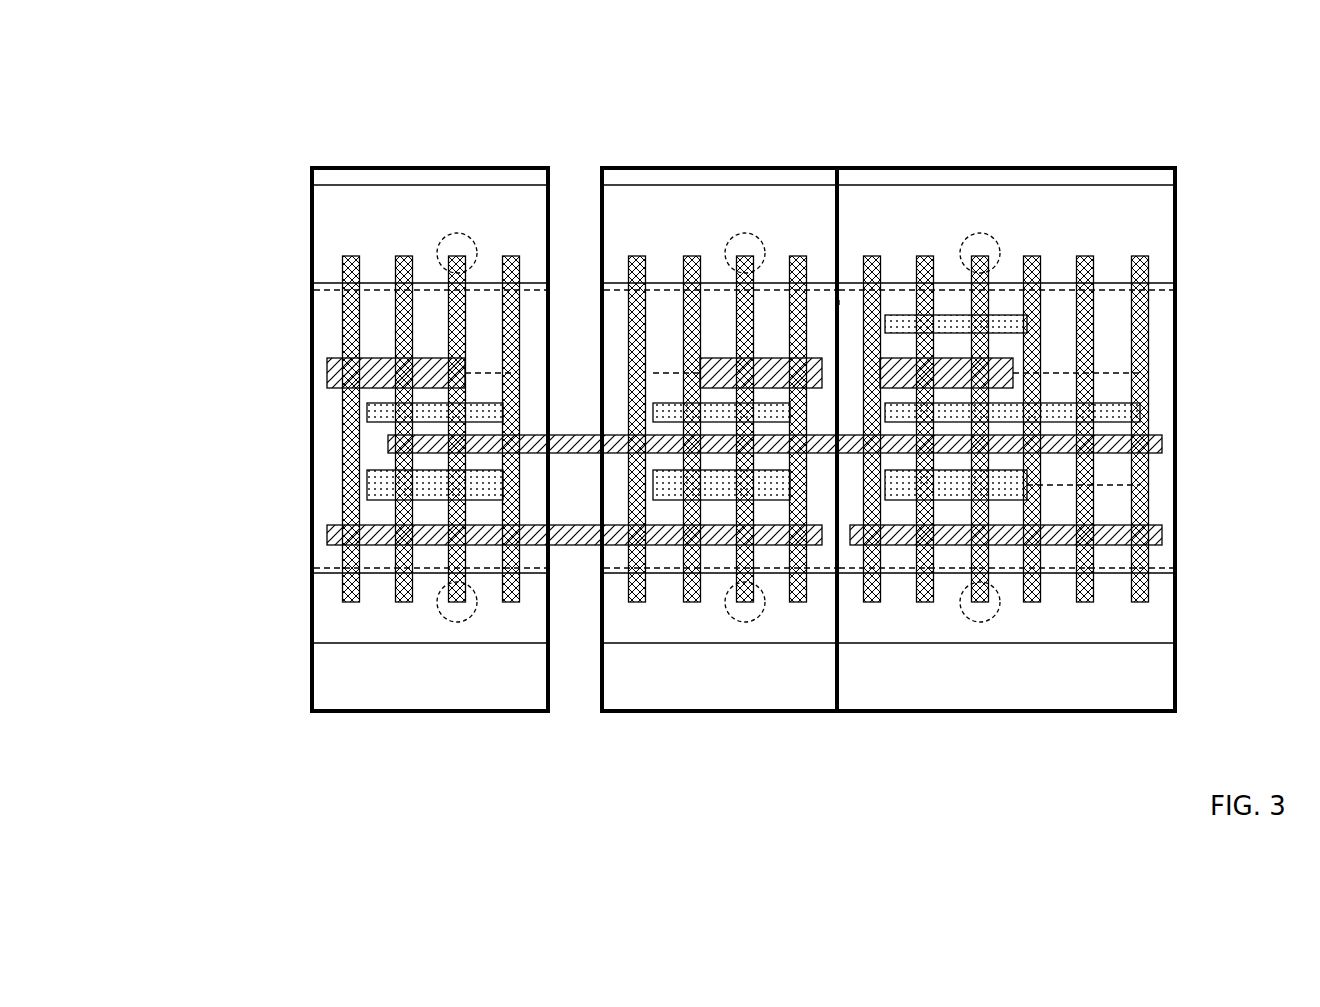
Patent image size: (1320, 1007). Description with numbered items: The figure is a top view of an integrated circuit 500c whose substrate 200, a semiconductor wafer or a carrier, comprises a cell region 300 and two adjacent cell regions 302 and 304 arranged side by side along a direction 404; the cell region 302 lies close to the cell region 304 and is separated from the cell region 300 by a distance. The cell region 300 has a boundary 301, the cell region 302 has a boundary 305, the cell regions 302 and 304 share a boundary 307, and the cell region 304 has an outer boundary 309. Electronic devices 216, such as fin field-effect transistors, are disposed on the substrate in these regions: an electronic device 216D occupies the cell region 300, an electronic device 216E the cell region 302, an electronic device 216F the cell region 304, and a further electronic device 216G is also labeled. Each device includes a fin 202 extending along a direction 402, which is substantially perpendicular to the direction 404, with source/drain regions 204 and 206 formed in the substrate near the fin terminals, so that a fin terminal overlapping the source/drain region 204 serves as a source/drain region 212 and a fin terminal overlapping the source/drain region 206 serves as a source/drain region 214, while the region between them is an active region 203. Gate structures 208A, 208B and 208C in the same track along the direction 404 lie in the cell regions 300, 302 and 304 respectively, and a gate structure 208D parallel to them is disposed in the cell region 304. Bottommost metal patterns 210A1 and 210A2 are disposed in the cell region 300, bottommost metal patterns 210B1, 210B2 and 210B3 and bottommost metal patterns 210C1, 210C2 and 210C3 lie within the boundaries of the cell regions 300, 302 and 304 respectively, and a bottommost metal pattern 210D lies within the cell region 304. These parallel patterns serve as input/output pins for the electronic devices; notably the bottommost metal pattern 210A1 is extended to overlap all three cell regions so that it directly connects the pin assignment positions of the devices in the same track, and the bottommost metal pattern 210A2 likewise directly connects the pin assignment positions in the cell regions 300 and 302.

The integrated circuit 500c is at (343, 132).
The substrate 200 is at (1163, 672).
The fin 202 is at (404, 256).
The active region 203 is at (428, 285).
The source/drain region 204 is at (527, 232).
The source/drain region 206 is at (404, 637).
The gate structure 208A is at (370, 480).
The gate structure 208B is at (770, 488).
The gate structure 208C is at (1010, 488).
The gate structure 208D is at (935, 318).
The bottommost metal pattern 210A1 is at (390, 442).
The bottommost metal pattern 210A2 is at (330, 532).
The bottommost metal pattern 210B1 is at (340, 373).
The bottommost metal pattern 210B2 is at (790, 370).
The bottommost metal pattern 210B3 is at (900, 372).
The bottommost metal pattern 210C1 is at (370, 410).
The bottommost metal pattern 210C2 is at (665, 405).
The bottommost metal pattern 210C3 is at (1140, 410).
The bottommost metal pattern 210D is at (1165, 535).
The source/drain region 212 is at (457, 233).
The source/drain region 214 is at (457, 622).
The electronic device 216 is at (1262, 255).
The electronic device 216D is at (228, 72).
The electronic device 216E is at (228, 210).
The electronic device 216F is at (228, 568).
The layer stack 216G is at (228, 698).
The cell region 300 is at (550, 714).
The cell region 302 is at (837, 714).
The cell region 304 is at (1177, 714).
The boundary 301 is at (552, 302).
The boundary 305 is at (600, 302).
The boundary 307 is at (841, 302).
The boundary 309 is at (1182, 222).
The direction 402 is at (1227, 157).
The direction 404 is at (1215, 157).